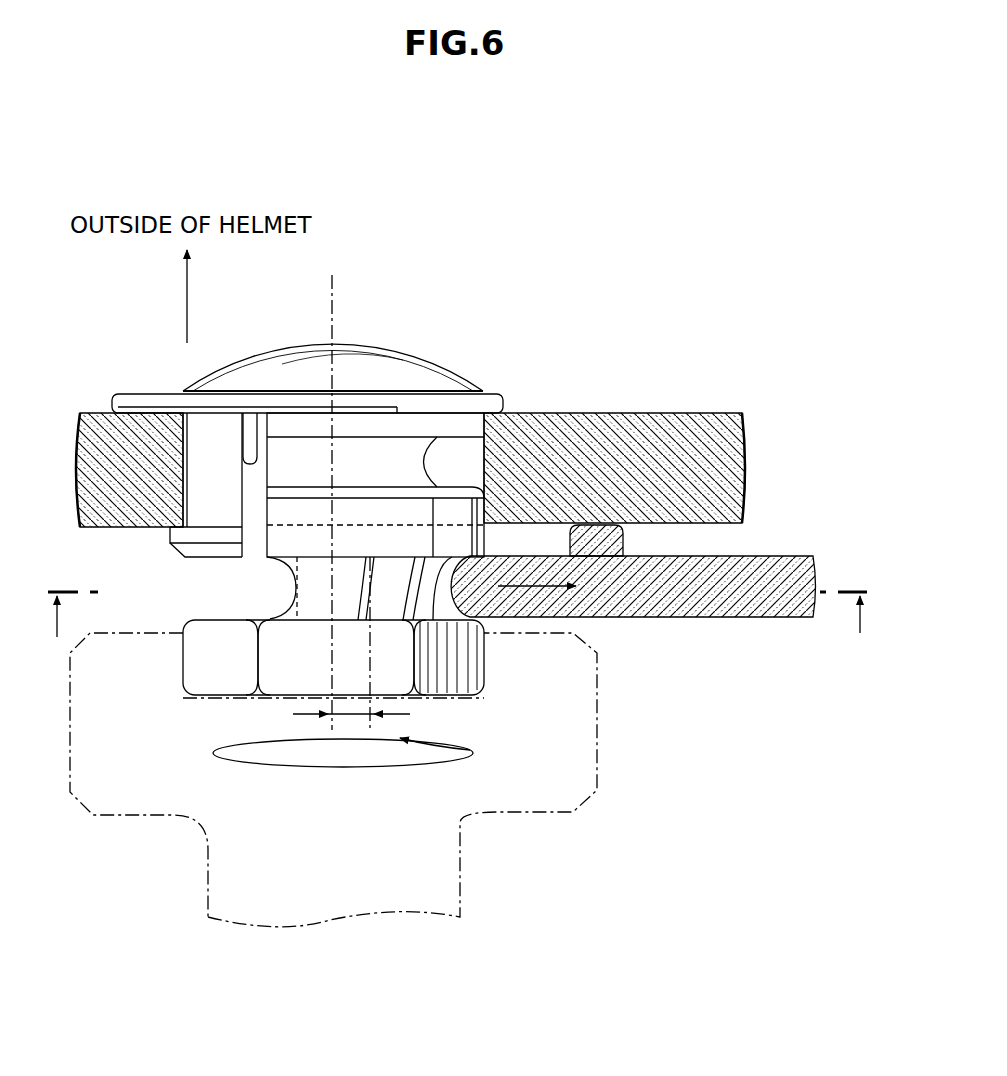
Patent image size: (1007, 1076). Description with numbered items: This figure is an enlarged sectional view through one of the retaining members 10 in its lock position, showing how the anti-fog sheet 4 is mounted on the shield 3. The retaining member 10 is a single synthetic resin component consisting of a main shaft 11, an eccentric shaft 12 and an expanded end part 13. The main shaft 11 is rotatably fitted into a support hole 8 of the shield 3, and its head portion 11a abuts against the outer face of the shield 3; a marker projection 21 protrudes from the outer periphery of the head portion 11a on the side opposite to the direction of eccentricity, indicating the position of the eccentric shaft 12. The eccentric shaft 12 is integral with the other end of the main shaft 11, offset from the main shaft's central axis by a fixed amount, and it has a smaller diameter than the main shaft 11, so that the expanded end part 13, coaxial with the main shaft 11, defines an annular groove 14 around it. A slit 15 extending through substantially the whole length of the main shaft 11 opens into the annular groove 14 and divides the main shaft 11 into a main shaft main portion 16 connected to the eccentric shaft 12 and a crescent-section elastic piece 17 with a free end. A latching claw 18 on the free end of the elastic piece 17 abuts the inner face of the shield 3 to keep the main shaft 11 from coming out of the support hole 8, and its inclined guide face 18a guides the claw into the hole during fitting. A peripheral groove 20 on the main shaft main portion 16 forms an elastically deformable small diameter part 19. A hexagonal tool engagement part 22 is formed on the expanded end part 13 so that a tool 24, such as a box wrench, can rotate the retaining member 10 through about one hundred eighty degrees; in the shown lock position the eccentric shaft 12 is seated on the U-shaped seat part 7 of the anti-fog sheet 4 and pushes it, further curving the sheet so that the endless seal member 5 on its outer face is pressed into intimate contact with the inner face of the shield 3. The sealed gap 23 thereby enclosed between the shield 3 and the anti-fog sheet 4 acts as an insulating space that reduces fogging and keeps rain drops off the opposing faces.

The shield 3 is at (648, 423).
The anti-fog sheet 4 is at (680, 600).
The seal member 5 is at (596, 543).
The seat part 7 is at (455, 585).
The support hole 8 is at (464, 428).
The retaining member 10 is at (281, 340).
The main shaft 11 is at (165, 752).
The head portion 11a is at (377, 402).
The eccentric shaft 12 is at (330, 604).
The expanded end part 13 is at (453, 693).
The annular groove 14 is at (462, 573).
The slit 15 is at (254, 455).
The main shaft main portion 16 is at (295, 535).
The elastic piece 17 is at (205, 485).
The latching claw 18 is at (223, 535).
The inclined guide face 18a is at (175, 548).
The small diameter part 19 is at (365, 474).
The peripheral groove 20 is at (423, 458).
The marker projection 21 is at (157, 398).
The tool engagement part 22 is at (465, 667).
The sealed gap 23 is at (690, 538).
The tool 24 is at (598, 757).